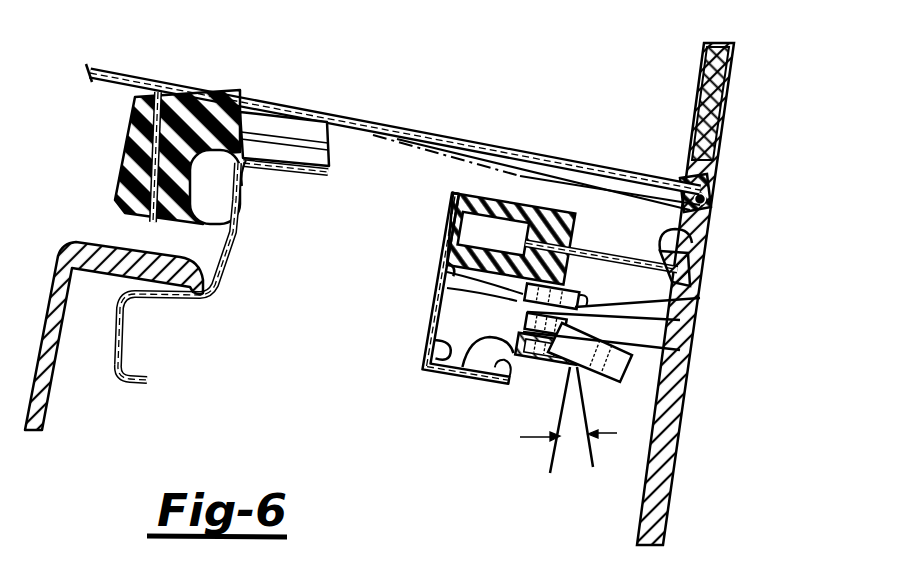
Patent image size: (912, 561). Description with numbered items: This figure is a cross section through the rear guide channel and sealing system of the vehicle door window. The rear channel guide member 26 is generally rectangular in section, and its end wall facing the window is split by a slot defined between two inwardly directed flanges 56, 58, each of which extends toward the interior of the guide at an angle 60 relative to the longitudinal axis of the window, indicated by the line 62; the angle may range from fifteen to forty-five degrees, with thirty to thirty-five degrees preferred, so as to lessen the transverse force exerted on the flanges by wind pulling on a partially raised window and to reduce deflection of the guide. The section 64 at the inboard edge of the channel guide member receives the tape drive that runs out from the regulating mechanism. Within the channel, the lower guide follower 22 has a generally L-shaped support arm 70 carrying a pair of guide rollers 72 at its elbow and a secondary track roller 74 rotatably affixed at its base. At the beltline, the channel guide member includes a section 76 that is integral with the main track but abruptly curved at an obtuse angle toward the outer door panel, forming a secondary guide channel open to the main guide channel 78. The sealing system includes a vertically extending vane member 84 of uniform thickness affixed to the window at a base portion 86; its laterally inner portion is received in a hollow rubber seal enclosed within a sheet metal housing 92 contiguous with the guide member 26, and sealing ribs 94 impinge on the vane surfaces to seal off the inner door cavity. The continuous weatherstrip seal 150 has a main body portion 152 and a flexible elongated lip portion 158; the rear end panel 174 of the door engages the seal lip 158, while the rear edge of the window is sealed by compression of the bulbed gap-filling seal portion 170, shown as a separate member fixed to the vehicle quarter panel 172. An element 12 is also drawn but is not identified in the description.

The panel 12 is at (663, 512).
The lower guide follower 22 is at (512, 314).
The rear channel guide member 26 is at (424, 303).
The inwardly directed flange 56 is at (588, 366).
The inwardly directed flange 58 is at (690, 301).
The angle 60 is at (562, 443).
The line 62 is at (565, 415).
The section 64 is at (478, 385).
The support arm 70 is at (690, 338).
The guide rollers 72 is at (440, 268).
The secondary track roller 74 is at (653, 382).
The section 76 is at (575, 284).
The main guide channel 78 is at (453, 290).
The vane member 84 is at (600, 242).
The base portion 86 is at (693, 234).
The sheet metal housing 92 is at (533, 192).
The sealing ribs 94 is at (447, 207).
The continuous weatherstrip seal 150 is at (123, 157).
The main body portion 152 is at (201, 96).
The flexible elongated lip portion 158 is at (234, 228).
The bulbed gap-filling seal portion 170 is at (707, 201).
The vehicle quarter panel 172 is at (722, 139).
The rear end panel 174 is at (248, 166).